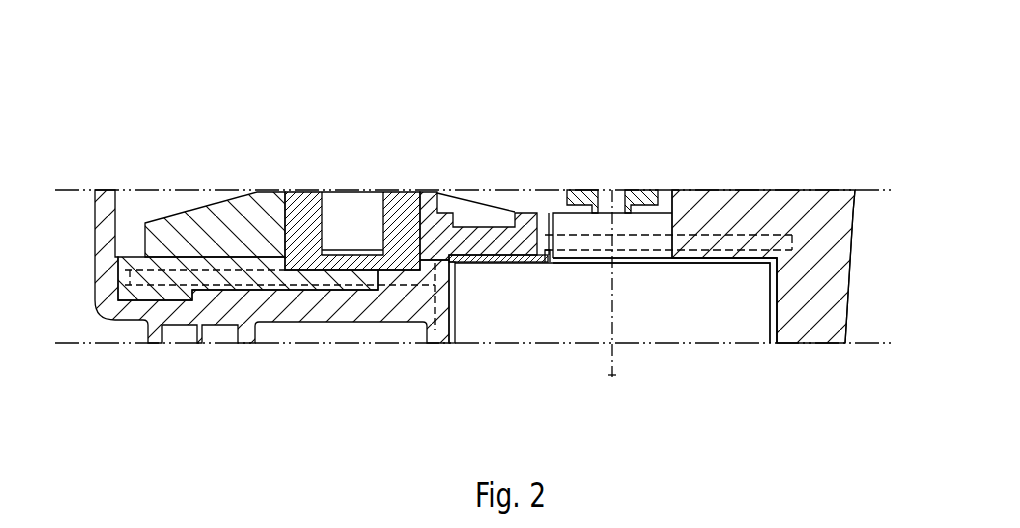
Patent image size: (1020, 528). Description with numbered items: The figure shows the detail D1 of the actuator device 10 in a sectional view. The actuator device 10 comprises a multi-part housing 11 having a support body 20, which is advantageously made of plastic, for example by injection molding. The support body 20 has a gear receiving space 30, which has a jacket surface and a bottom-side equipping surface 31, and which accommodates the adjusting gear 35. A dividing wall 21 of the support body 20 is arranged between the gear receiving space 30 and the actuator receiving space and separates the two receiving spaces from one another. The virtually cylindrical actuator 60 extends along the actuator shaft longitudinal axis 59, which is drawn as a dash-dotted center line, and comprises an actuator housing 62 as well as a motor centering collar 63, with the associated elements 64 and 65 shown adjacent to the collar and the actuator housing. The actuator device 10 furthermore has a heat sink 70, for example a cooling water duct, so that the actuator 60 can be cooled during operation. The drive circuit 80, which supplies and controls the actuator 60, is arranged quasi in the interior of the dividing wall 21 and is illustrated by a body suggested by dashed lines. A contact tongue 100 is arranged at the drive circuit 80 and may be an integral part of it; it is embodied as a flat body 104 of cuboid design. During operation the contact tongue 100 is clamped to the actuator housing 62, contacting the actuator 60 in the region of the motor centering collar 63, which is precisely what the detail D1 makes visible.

The actuator device 10 is at (820, 162).
The housing 11 is at (855, 298).
The support body 20 is at (855, 213).
The dividing wall 21 is at (400, 308).
The gear receiving space 30 is at (155, 205).
The bottom-side equipping surface 31 is at (203, 250).
The adjusting gear 35 is at (393, 177).
The actuator shaft longitudinal axis 59 is at (605, 379).
The actuator 60 is at (698, 322).
The actuator housing 62 is at (665, 300).
The motor centering collar 63 is at (640, 212).
The latching element 64 is at (641, 201).
The liner wall 65 is at (773, 303).
The heat sink 70 is at (437, 345).
The drive circuit 80 is at (117, 278).
The contact tongue 100 is at (547, 250).
The flat body 104 is at (498, 258).
The detail D1 is at (738, 118).